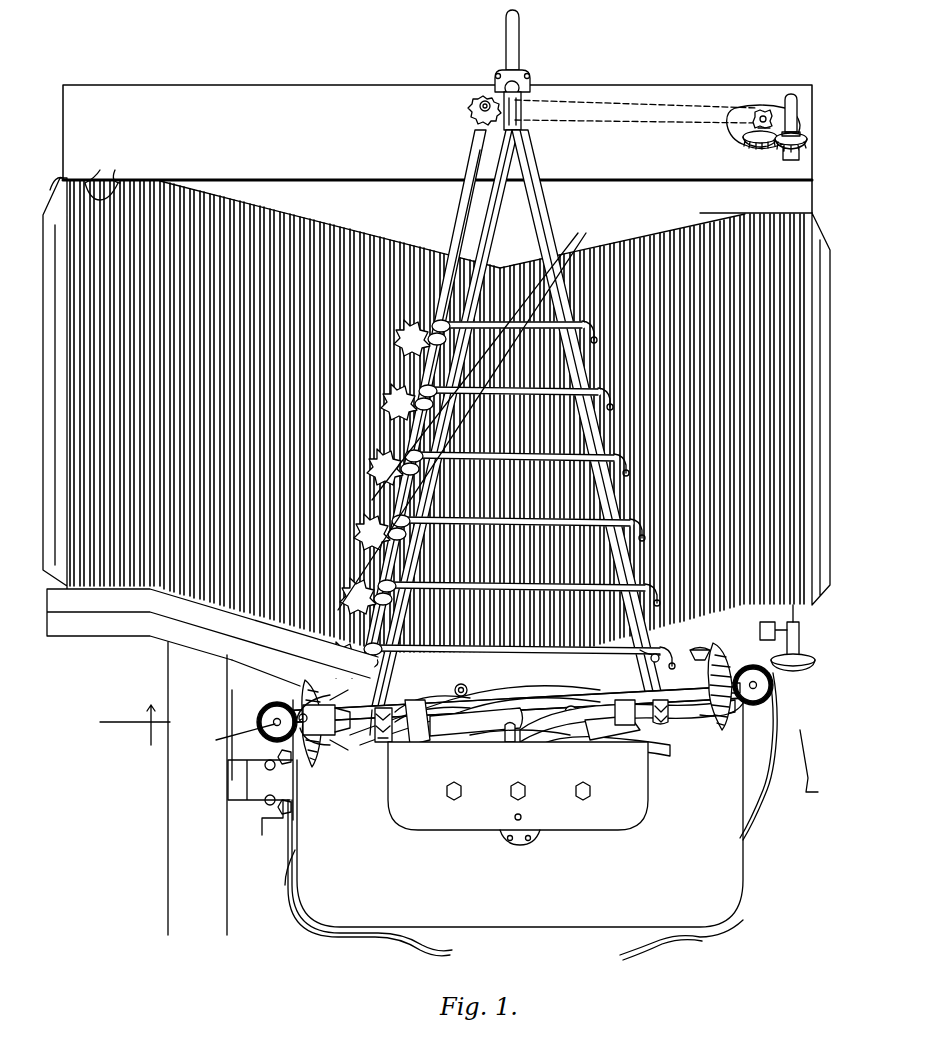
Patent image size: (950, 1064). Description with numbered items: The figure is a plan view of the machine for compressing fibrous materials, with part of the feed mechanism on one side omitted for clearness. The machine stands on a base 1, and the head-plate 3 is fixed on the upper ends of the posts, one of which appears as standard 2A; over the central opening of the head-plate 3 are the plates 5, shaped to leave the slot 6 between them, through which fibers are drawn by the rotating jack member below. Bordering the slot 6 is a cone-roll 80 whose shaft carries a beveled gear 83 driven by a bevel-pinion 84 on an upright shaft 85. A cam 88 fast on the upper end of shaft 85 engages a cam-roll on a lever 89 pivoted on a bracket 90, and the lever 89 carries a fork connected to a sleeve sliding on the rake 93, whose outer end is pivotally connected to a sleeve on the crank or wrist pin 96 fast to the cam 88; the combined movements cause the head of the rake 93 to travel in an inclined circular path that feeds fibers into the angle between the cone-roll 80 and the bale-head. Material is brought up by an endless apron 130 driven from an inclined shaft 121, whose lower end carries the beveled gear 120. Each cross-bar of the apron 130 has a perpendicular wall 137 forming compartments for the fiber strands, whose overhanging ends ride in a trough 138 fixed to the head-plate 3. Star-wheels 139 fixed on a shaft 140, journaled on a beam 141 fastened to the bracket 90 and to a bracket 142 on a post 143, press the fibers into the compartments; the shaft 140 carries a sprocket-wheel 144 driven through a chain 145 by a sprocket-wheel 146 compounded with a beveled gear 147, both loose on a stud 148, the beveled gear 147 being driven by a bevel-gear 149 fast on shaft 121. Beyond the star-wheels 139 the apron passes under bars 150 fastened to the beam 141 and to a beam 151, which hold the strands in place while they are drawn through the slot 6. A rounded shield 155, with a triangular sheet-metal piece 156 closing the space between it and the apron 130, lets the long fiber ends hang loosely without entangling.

The base 1 is at (763, 800).
The column 2A is at (200, 788).
The head-plate 3 is at (514, 830).
The plate 5 is at (518, 787).
The slot 6 is at (450, 763).
The cone-roll 80 is at (425, 714).
The beveled gear 83 is at (320, 762).
The bevel-pinion 84 is at (290, 722).
The upright shaft 85 is at (806, 738).
The cam 88 is at (768, 690).
The lever 89 is at (300, 708).
The bracket 90 is at (376, 746).
The rake 93 is at (675, 644).
The crank or wrist pin 96 is at (262, 722).
The beveled gear 120 is at (806, 660).
The inclined shaft 121 is at (798, 120).
The endless apron 130 is at (300, 205).
The perpendicular wing or wall 137 is at (97, 170).
The trough 138 is at (212, 633).
The star-wheel 139 is at (322, 620).
The shaft 140 is at (470, 168).
The beam 141 is at (492, 203).
The bracket 142 is at (527, 80).
The post 143 is at (508, 40).
The sprocket-wheel 144 is at (468, 110).
The chain 145 is at (690, 122).
The sprocket-wheel 146 is at (760, 110).
The beveled gear 147 is at (750, 140).
The stud 148 is at (768, 116).
The bevel-gear 149 is at (784, 150).
The bar 150 is at (500, 444).
The beam 151 is at (545, 193).
The rounded shield 155 is at (333, 86).
The sheet metal piece 156 is at (356, 180).